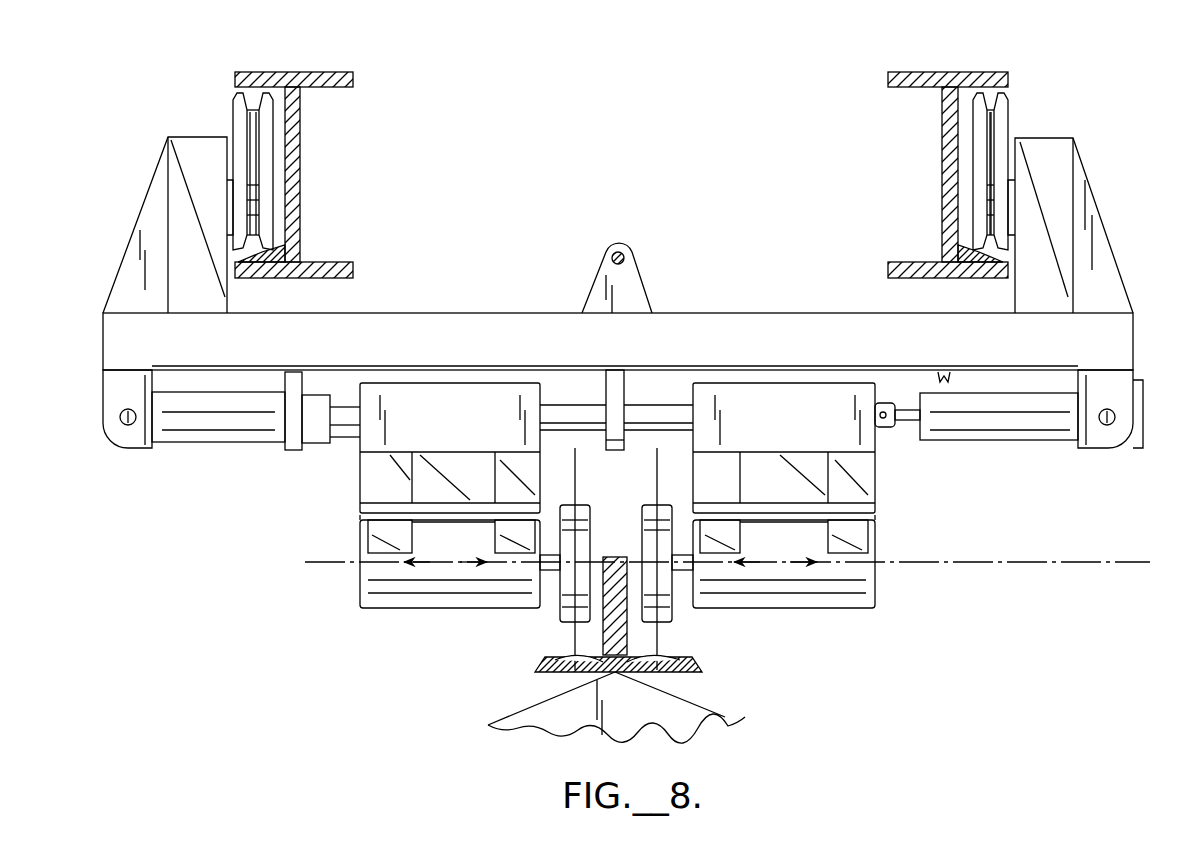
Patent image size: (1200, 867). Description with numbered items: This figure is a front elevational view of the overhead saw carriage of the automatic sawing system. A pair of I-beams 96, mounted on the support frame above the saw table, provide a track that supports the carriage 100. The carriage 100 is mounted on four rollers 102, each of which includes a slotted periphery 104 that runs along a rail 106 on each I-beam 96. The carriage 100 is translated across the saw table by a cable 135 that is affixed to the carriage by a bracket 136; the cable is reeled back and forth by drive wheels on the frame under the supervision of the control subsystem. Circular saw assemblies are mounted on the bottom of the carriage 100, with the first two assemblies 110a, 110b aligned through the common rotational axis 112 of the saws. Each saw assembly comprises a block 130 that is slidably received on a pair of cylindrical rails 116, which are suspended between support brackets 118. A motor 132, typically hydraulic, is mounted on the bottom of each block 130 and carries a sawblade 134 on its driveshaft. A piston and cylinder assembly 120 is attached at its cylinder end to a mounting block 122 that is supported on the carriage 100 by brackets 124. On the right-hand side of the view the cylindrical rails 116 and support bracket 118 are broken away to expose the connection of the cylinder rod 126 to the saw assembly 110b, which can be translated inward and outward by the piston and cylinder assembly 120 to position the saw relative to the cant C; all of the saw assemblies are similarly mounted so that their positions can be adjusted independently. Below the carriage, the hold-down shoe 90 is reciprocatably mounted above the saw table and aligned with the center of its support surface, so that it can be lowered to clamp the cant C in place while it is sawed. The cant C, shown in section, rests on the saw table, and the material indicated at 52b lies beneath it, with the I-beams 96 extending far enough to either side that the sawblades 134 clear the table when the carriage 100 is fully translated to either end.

The I-beam 96 is at (283, 72).
The carriage 100 is at (1118, 233).
The roller 102 is at (275, 162).
The slotted periphery 104 is at (235, 98).
The rail 106 is at (268, 256).
The cable 135 is at (612, 254).
The bracket 136 is at (592, 292).
The cylindrical rail 116 is at (320, 442).
The support bracket 118 is at (285, 447).
The piston and cylinder assembly 120 is at (205, 445).
The mounting block 122 is at (105, 434).
The bracket 124 is at (110, 388).
The cylinder rod 126 is at (905, 430).
The block 130 is at (617, 448).
The motor 132 is at (400, 600).
The sawblade 134 is at (565, 626).
The common rotational axis 112 is at (1010, 560).
The circular saw assembly 110a is at (345, 518).
The circular saw assembly 110b is at (890, 515).
The hold-down shoe 90 is at (615, 555).
The cant C is at (690, 660).
The material pile 52b is at (685, 706).